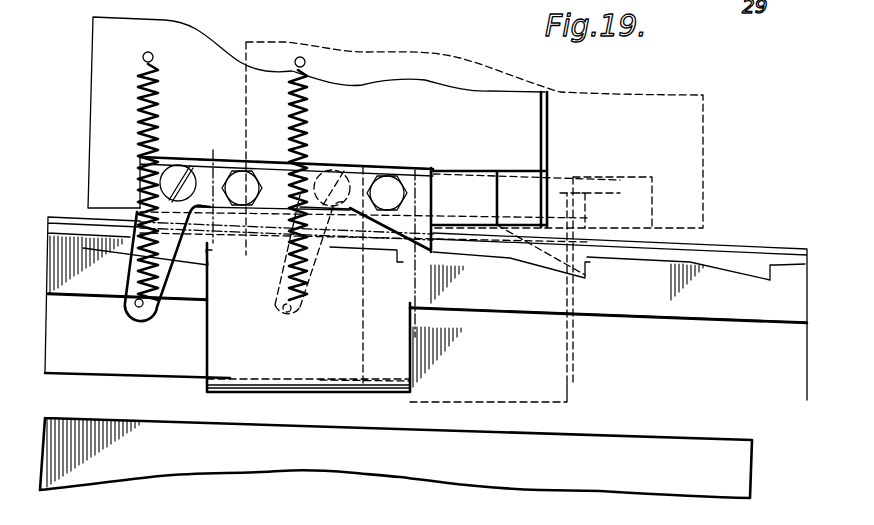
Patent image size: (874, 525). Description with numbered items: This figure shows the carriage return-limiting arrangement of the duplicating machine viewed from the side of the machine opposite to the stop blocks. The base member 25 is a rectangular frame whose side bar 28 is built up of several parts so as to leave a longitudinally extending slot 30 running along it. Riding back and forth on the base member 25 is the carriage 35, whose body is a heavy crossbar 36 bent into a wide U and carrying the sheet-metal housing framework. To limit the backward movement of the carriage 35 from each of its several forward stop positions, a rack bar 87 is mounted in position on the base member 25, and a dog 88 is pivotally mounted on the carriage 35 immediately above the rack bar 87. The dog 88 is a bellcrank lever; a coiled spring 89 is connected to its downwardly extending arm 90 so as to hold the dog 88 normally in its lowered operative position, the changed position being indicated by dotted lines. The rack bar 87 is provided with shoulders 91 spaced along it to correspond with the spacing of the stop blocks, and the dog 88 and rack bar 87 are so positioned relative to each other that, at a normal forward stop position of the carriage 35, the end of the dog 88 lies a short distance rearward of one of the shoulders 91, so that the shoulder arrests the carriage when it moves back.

The base member 25 is at (760, 404).
The side bar 28 is at (668, 382).
The longitudinally extending slot 30 is at (102, 383).
The carriage 35 is at (90, 87).
The crossbar 36 is at (393, 353).
The rack bar 87 is at (642, 305).
The dog 88 is at (272, 170).
The coiled spring 89 is at (140, 96).
The downwardly extending arm 90 is at (158, 272).
The shoulder 91 is at (208, 248).